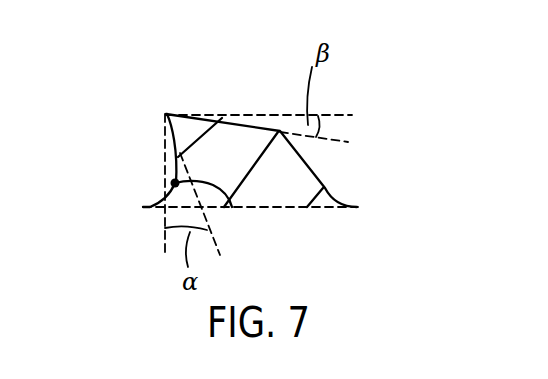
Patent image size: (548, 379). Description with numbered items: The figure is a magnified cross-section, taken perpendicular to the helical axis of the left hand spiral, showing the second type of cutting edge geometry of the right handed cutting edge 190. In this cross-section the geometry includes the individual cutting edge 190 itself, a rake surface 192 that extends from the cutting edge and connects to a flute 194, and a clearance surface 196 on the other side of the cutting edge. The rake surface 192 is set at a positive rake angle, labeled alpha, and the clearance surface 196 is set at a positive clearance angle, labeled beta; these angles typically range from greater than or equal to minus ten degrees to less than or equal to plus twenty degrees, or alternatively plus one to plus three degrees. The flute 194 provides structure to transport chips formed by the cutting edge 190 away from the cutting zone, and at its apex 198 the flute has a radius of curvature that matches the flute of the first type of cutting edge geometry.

The right handed cutting edge 190 is at (167, 114).
The rake surface 192 is at (168, 124).
The flute 194 is at (138, 177).
The clearance surface 196 is at (220, 116).
The apex of the flute 198 is at (232, 207).